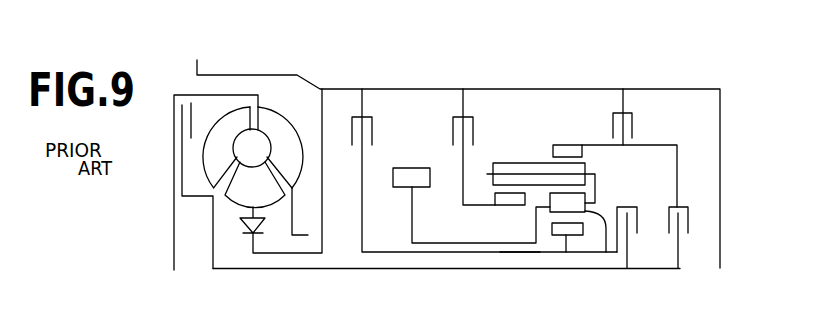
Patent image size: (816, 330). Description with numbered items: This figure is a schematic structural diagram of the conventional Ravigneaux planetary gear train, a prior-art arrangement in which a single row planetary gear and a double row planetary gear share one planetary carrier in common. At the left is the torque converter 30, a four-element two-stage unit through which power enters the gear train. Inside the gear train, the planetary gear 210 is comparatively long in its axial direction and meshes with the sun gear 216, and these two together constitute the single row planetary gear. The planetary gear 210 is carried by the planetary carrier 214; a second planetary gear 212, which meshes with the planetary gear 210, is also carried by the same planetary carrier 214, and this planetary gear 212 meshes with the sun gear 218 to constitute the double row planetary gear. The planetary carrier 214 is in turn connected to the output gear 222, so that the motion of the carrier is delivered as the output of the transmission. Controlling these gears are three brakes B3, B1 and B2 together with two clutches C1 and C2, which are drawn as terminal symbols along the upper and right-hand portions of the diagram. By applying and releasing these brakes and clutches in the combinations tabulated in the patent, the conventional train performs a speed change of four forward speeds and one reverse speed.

The torque converter 30 is at (248, 209).
The output gear 222 is at (410, 168).
The planetary gear 210 is at (512, 163).
The sun gear 216 is at (512, 207).
The planetary carrier 214 is at (515, 255).
The sun gear 218 is at (552, 236).
The planetary gear 212 is at (607, 253).
The brake B3 is at (482, 157).
The brake B1 is at (473, 134).
The brake B2 is at (629, 134).
The clutch C1 is at (627, 223).
The clutch C2 is at (688, 225).